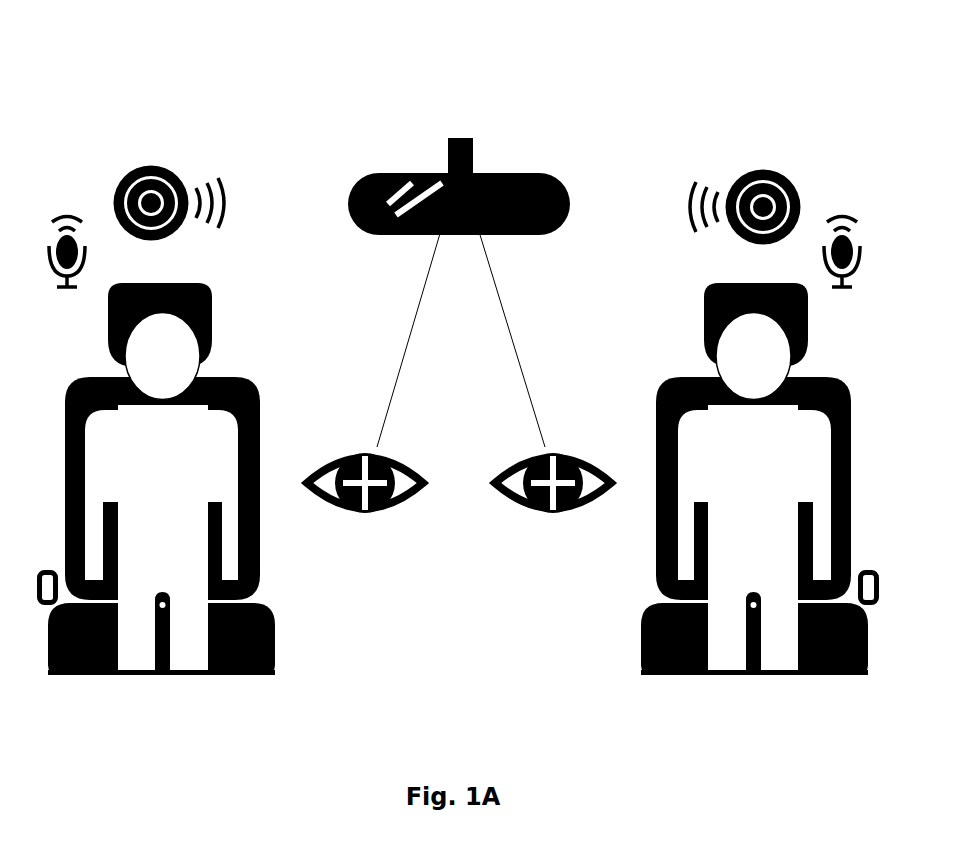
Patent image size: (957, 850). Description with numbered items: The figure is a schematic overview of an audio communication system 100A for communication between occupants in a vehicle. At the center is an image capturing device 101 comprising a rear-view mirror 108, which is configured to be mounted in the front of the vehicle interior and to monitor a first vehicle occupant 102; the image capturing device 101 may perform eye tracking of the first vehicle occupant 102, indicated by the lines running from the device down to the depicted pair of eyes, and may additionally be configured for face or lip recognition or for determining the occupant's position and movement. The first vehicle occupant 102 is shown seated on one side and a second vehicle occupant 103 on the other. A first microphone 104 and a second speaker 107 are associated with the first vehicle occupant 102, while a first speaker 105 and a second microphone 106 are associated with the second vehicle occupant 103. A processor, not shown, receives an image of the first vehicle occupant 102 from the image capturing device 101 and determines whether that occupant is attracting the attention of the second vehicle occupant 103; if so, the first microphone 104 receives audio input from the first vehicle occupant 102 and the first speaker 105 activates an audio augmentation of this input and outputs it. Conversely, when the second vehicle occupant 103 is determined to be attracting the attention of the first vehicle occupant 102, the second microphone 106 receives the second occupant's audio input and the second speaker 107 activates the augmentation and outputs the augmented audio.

The audio communication system 100A is at (560, 70).
The image capturing device 101 is at (460, 137).
The rear-view mirror 108 is at (553, 178).
The first vehicle occupant 102 is at (228, 383).
The second vehicle occupant 103 is at (683, 388).
The first microphone 104 is at (66, 210).
The second speaker 107 is at (167, 170).
The first speaker 105 is at (775, 175).
The second microphone 106 is at (842, 213).